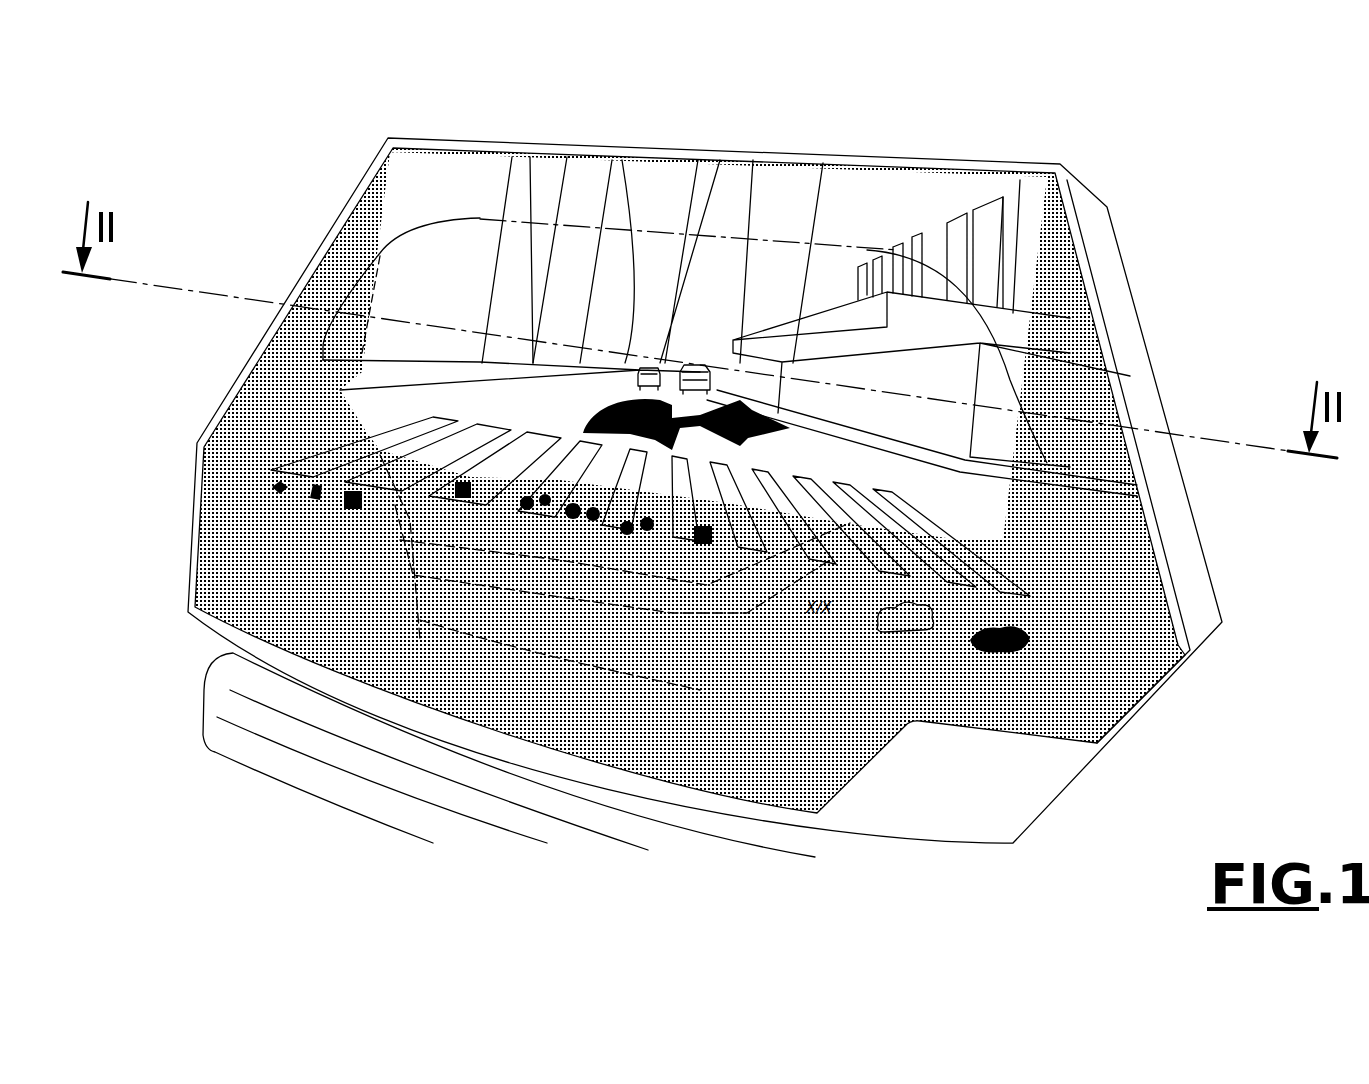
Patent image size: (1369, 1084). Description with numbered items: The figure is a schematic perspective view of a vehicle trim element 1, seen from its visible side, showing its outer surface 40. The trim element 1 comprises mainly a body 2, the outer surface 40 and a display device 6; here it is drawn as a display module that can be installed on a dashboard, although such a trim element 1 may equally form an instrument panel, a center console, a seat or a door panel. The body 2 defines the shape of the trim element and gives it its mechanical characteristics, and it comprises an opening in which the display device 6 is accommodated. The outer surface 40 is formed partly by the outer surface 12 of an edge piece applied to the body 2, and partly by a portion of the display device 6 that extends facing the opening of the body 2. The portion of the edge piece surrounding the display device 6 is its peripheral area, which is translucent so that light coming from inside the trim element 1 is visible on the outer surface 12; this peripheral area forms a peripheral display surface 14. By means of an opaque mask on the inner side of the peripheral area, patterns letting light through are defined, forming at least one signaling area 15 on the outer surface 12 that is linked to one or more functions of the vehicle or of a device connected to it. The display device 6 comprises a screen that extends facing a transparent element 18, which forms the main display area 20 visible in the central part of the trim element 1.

The vehicle trim element 1 is at (1215, 252).
The body 2 is at (1180, 531).
The display device 6 is at (634, 366).
The outer surface of the edge piece 12 is at (1053, 393).
The peripheral display surface 14 is at (380, 253).
The signaling area 15 is at (650, 530).
The transparent element 18 is at (525, 265).
The main display area 20 is at (725, 350).
The outer surface 40 is at (1050, 277).